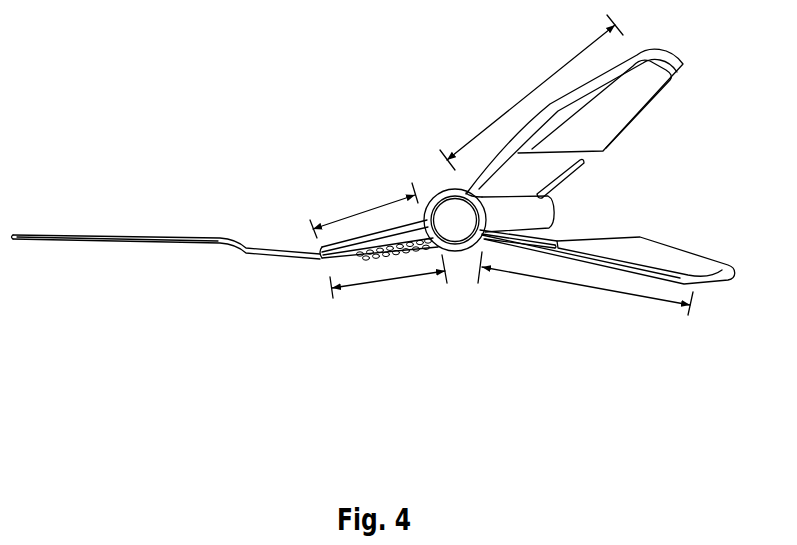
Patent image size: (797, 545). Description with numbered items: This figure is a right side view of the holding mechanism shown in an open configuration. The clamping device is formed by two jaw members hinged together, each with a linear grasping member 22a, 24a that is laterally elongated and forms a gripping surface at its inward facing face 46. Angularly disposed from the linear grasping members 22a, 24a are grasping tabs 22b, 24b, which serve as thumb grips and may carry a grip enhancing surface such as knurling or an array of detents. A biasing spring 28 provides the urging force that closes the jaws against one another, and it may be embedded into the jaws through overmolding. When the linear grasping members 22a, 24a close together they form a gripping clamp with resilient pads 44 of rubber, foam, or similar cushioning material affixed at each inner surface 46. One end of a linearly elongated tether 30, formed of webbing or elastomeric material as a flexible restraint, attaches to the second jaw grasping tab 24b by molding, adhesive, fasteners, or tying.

The linear grasping member 22a is at (531, 92).
The grasping tab 22b is at (364, 210).
The linear grasping member 24a is at (585, 283).
The grasping tab 24b is at (388, 276).
The biasing spring 28 is at (580, 165).
The tether 30 is at (118, 244).
The resilient pad 44 is at (648, 85).
The inward facing face 46 is at (540, 181).